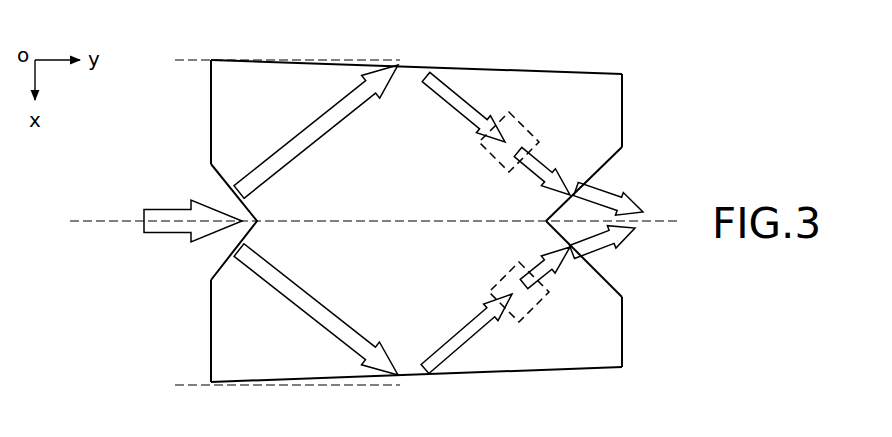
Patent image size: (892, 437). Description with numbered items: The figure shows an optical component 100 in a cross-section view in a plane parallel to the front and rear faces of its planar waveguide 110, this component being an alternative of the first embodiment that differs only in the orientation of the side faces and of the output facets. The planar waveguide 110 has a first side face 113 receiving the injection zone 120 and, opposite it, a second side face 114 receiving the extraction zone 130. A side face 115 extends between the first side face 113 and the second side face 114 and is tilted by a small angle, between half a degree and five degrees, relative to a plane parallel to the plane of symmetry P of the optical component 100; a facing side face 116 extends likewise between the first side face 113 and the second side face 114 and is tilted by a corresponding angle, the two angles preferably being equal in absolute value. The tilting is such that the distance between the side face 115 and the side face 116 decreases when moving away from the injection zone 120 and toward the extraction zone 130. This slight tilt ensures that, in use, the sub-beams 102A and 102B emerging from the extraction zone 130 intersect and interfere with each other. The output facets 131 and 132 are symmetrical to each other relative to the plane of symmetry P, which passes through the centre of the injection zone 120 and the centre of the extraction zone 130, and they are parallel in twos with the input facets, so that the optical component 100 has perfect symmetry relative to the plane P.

The optical component 100 is at (582, 46).
The sub-beam 102A is at (597, 184).
The sub-beam 102B is at (598, 242).
The planar waveguide 110 is at (221, 118).
The first side face 113 is at (211, 318).
The second side face 114 is at (626, 352).
The side face 115 is at (462, 72).
The side face 116 is at (473, 374).
The injection zone 120 is at (200, 190).
The extraction zone 130 is at (632, 174).
The output facet 131 is at (607, 155).
The output facet 132 is at (614, 284).
The plane of symmetry P is at (663, 218).